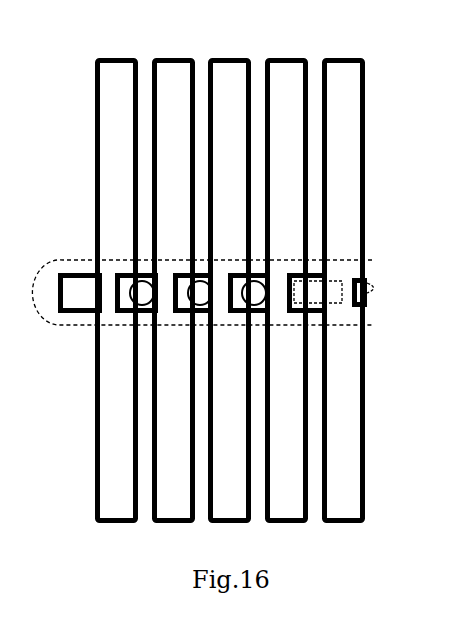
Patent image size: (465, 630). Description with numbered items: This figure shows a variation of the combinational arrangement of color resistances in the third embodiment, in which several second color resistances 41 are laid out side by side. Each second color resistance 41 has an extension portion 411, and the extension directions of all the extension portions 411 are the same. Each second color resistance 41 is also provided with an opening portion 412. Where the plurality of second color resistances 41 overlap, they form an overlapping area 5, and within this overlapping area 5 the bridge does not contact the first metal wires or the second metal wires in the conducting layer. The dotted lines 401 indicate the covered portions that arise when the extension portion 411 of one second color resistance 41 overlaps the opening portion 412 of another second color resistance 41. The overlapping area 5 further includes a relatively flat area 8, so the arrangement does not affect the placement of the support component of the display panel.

The second color resistance 41 is at (104, 58).
The extension portion 411 is at (97, 252).
The relatively flat area 8 is at (150, 284).
The dotted lines 401 is at (342, 278).
The opening portion 412 is at (375, 284).
The overlapping area 5 is at (338, 320).